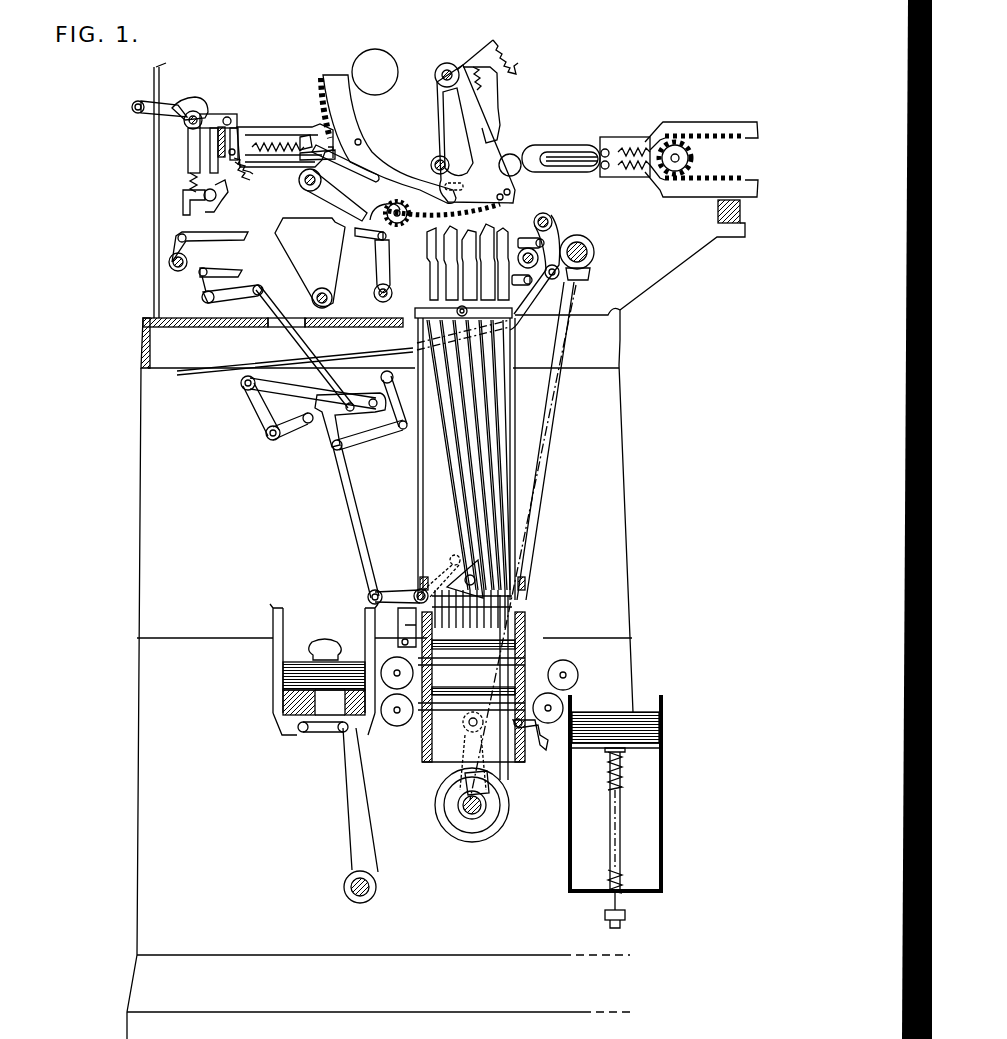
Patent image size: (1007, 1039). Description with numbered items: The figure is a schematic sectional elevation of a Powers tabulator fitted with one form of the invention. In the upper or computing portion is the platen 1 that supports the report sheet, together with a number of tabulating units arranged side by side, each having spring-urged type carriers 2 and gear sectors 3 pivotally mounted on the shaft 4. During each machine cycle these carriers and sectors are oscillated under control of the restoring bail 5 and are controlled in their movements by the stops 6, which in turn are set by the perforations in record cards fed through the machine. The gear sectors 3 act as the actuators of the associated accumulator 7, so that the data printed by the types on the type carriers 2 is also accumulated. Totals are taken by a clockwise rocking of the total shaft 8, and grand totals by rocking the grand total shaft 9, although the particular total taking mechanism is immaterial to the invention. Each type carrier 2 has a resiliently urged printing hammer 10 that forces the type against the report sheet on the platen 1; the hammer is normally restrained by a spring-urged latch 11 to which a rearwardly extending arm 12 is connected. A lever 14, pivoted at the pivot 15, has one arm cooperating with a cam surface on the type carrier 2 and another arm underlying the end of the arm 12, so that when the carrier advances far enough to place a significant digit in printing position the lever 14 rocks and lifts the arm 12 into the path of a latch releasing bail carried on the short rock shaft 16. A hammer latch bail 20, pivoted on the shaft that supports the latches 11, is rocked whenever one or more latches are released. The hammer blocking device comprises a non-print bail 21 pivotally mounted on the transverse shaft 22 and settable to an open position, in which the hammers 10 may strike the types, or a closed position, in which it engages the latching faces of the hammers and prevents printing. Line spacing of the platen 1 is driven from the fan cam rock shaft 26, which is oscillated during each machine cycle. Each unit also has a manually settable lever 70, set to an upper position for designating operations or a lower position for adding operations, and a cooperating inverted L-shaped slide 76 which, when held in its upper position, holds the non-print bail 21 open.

The platen 1 is at (379, 57).
The type carrier 2 is at (371, 157).
The gear sector 3 is at (492, 158).
The shaft 4 is at (450, 70).
The restoring bail 5 is at (437, 161).
The stops 6 is at (443, 251).
The accumulator 7 is at (400, 216).
The total shaft 8 is at (203, 299).
The grand total shaft 9 is at (178, 268).
The printing hammer 10 is at (262, 132).
The latch 11 is at (243, 175).
The arm 12 is at (283, 158).
The lever 14 is at (356, 160).
The pivot 15 is at (331, 152).
The rock shaft 16 is at (305, 137).
The hammer latch bail 20 is at (221, 192).
The non-print bail 21 is at (237, 124).
The transverse shaft 22 is at (226, 117).
The fan cam rock shaft 26 is at (313, 300).
The manually settable lever 70 is at (148, 103).
The slide 76 is at (203, 103).